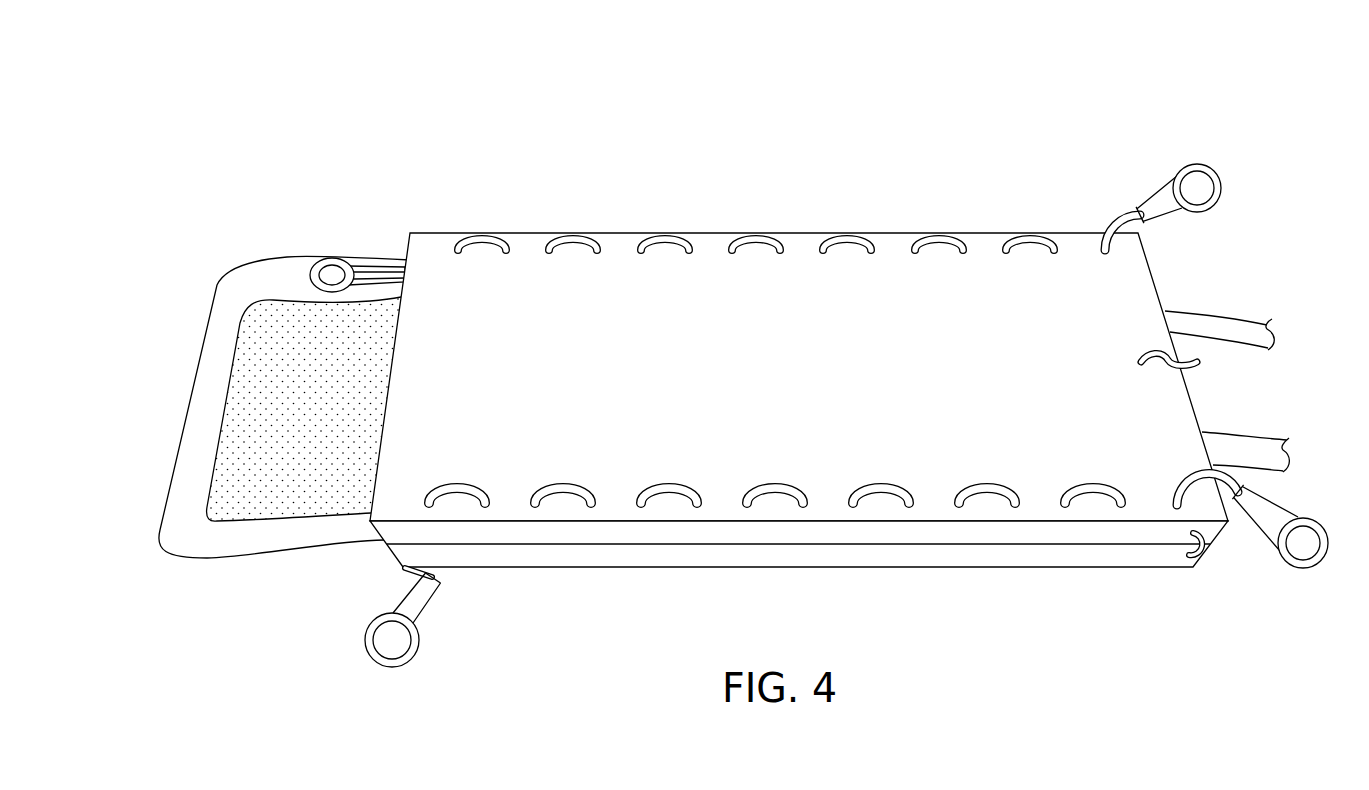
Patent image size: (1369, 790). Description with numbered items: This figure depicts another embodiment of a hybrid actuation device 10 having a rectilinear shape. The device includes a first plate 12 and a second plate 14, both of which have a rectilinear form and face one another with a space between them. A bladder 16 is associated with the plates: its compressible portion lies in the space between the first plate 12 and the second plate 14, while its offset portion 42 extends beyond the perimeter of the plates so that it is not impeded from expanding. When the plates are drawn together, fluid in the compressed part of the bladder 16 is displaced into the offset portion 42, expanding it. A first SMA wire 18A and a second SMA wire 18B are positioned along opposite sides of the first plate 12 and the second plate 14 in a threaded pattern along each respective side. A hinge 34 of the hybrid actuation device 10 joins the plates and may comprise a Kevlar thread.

The hybrid actuation device 10 is at (734, 352).
The first plate 12 is at (708, 238).
The second plate 14 is at (672, 555).
The bladder 16 is at (275, 364).
The first SMA wire 18A is at (573, 236).
The second SMA wire 18B is at (563, 487).
The hinge 34 is at (1188, 544).
The offset portion 42 is at (240, 399).